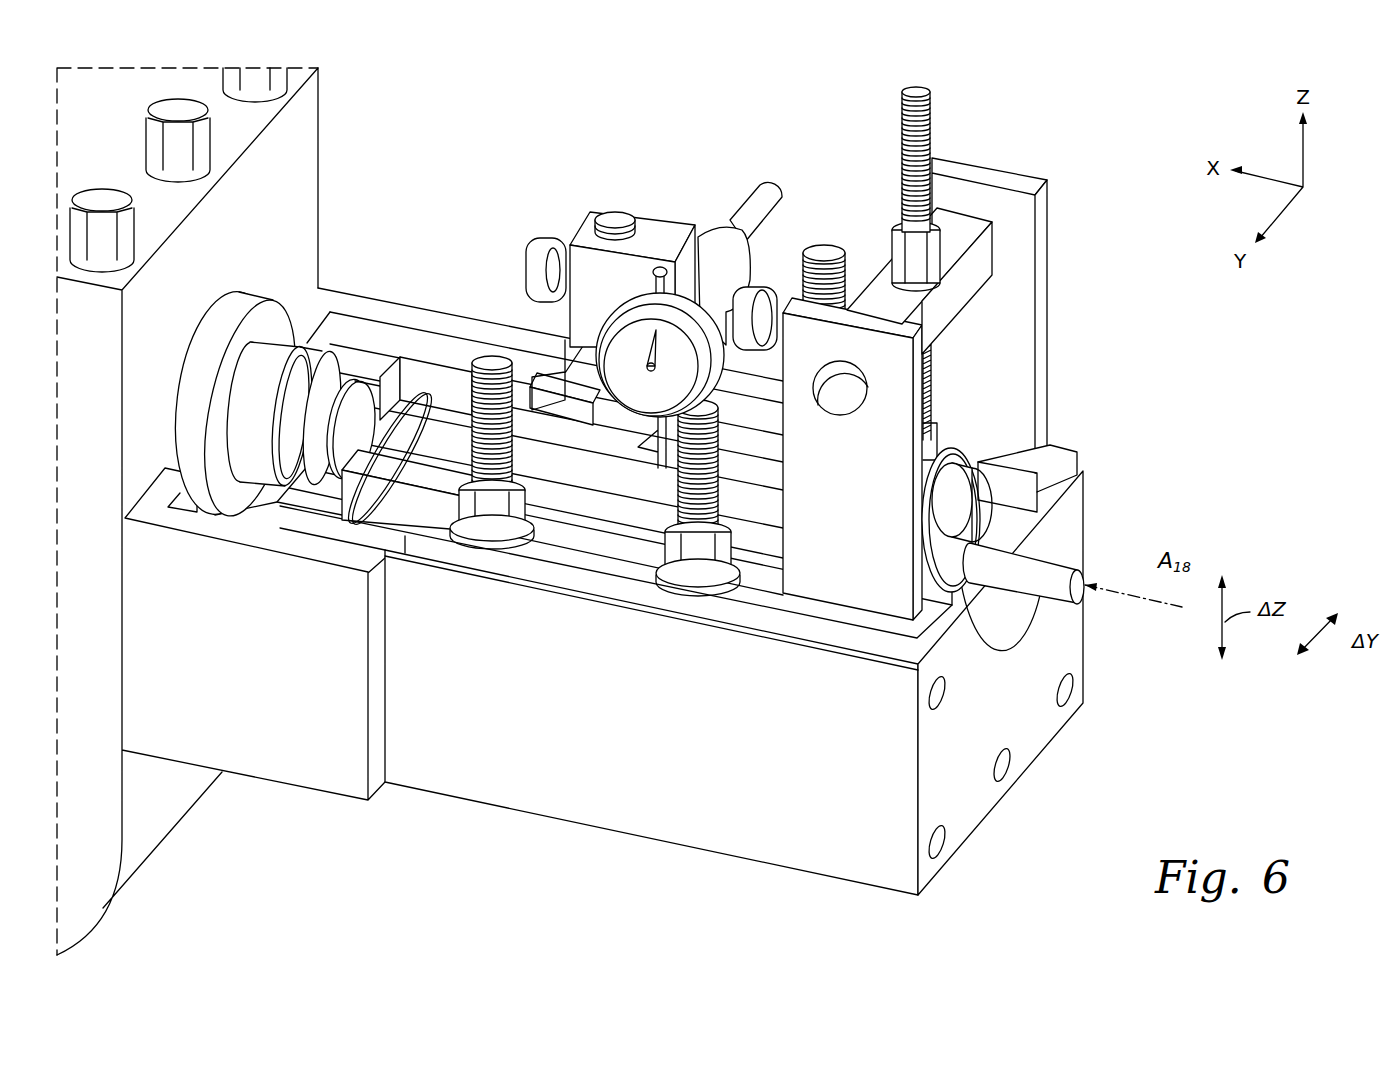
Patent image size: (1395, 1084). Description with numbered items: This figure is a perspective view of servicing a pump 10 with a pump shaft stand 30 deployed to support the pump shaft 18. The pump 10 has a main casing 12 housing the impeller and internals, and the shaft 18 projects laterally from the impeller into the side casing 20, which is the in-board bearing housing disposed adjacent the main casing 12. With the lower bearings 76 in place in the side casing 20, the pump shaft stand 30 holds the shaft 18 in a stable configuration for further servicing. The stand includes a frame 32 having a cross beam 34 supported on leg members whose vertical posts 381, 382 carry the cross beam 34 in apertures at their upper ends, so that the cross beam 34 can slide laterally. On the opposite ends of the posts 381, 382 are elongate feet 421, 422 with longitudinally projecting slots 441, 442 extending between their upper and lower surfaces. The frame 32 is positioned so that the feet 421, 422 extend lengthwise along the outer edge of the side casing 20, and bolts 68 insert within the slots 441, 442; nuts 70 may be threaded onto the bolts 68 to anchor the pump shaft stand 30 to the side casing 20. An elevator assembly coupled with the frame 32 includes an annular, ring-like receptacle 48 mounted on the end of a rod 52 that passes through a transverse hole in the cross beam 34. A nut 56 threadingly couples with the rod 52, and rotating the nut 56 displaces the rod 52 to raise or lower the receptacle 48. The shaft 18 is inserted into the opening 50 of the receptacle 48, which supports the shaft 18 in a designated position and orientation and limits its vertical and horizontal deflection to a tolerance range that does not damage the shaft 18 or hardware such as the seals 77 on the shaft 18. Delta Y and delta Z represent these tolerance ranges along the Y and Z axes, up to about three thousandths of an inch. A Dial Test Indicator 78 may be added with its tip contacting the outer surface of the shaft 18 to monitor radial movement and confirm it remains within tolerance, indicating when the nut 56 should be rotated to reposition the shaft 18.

The pump 10 is at (178, 890).
The main casing 12 is at (180, 808).
The pump shaft 18 is at (1055, 597).
The side casing 20 is at (710, 845).
The pump shaft stand 30 is at (988, 291).
The frame 32 is at (1025, 178).
The cross beam 34 is at (940, 325).
The vertical post 381 is at (1047, 367).
The vertical post 382 is at (852, 572).
The foot 421 is at (1060, 452).
The foot 422 is at (753, 583).
The slot 441 is at (780, 410).
The slot 442 is at (578, 544).
The receptacle 48 is at (947, 450).
The opening 50 is at (950, 507).
The rod 52 is at (900, 120).
The nut 56 is at (897, 252).
The bolts 68 is at (490, 360).
The nuts 70 is at (473, 518).
The lower bearings 76 is at (358, 482).
The seals 77 is at (423, 380).
The Dial Test Indicator 78 is at (625, 352).